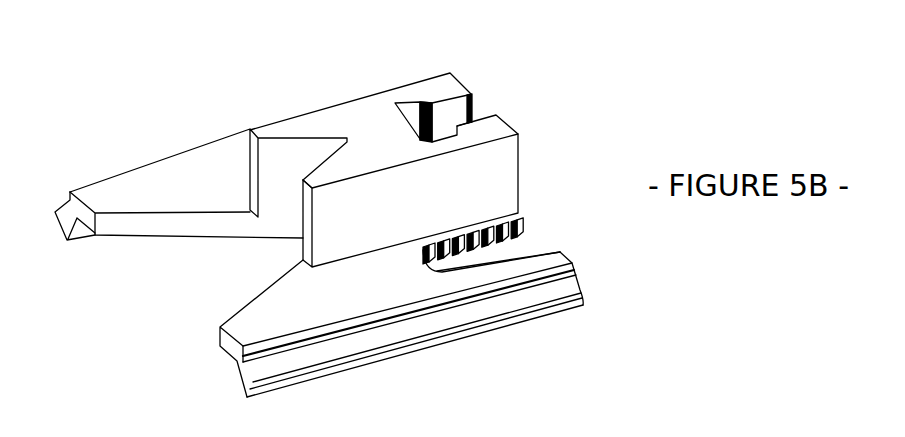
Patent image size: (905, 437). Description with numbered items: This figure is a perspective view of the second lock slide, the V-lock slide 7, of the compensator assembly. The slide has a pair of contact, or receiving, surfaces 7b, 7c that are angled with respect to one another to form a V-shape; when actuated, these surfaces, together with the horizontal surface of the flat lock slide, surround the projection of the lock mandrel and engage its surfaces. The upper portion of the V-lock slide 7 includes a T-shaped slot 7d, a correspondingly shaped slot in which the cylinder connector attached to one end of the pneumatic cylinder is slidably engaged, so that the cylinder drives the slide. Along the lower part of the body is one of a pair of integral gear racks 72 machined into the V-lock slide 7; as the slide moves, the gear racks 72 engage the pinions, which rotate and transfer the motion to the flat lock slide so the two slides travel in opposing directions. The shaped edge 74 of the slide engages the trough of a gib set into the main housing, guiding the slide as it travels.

The V-lock slide 7 is at (144, 312).
The contact surface 7b is at (295, 153).
The contact surface 7c is at (320, 167).
The T-shaped slot 7d is at (494, 93).
The gear rack 72 is at (520, 236).
The edge 74 is at (437, 328).